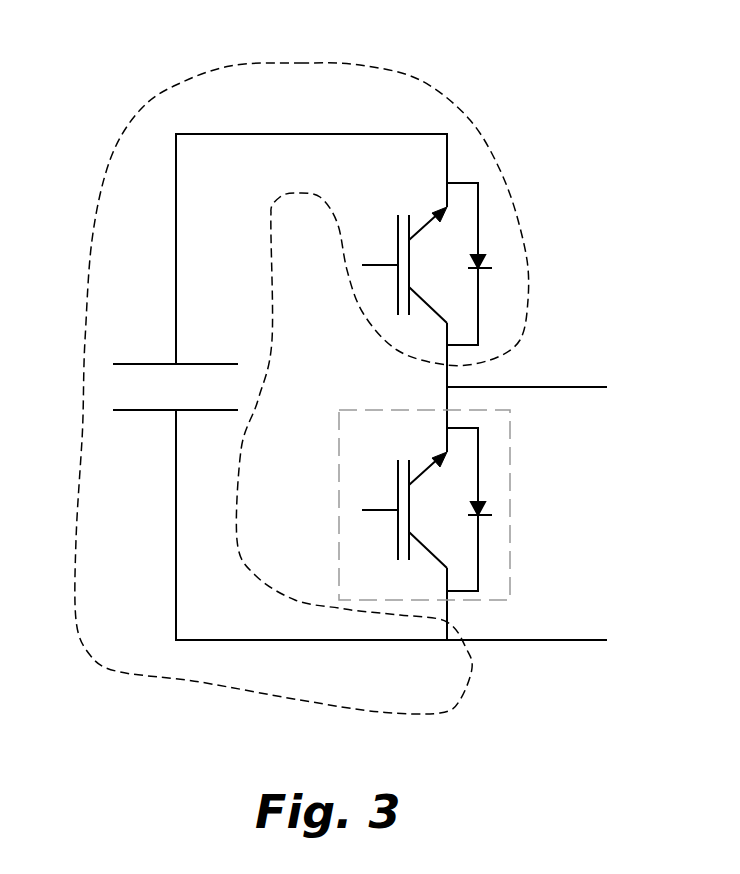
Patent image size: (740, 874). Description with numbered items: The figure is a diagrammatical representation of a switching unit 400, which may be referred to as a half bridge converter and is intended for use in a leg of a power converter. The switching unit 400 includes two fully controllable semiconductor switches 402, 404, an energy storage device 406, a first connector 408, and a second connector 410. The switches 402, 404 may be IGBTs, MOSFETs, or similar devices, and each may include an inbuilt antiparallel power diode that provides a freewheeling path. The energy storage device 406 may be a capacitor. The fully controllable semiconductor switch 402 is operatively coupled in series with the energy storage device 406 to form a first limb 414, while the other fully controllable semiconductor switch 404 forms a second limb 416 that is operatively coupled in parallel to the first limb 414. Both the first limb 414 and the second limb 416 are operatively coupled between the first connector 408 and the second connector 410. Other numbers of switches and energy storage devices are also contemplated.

The switching unit 400 is at (512, 68).
The fully controllable semiconductor switch 402 is at (397, 240).
The fully controllable semiconductor switch 404 is at (397, 485).
The energy storage device 406 is at (146, 364).
The first connector 408 is at (553, 387).
The second connector 410 is at (572, 640).
The first limb 414 is at (122, 142).
The second limb 416 is at (514, 453).